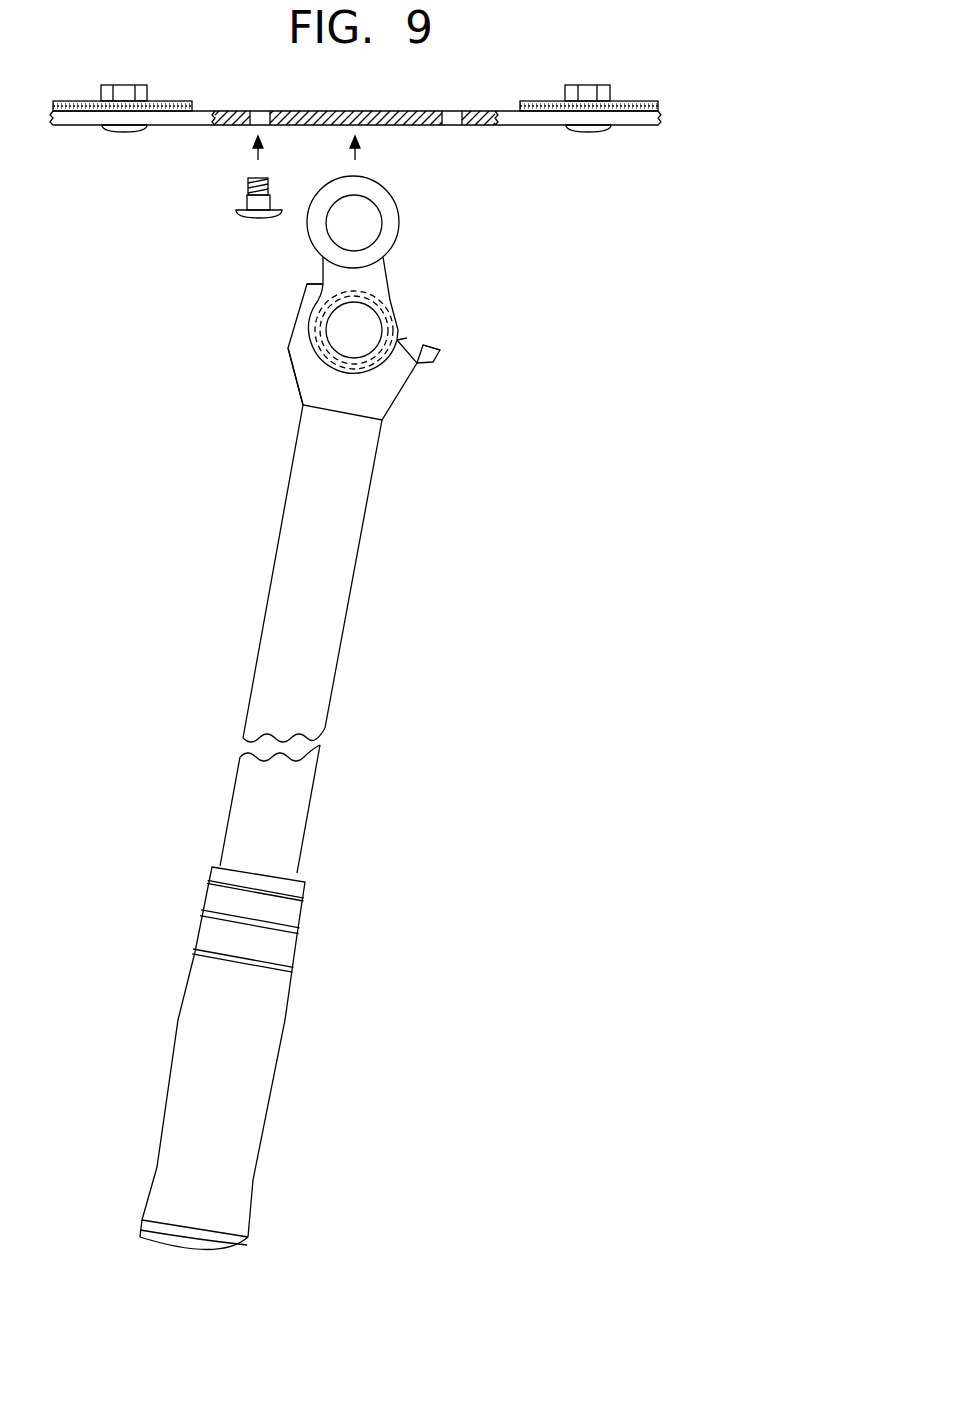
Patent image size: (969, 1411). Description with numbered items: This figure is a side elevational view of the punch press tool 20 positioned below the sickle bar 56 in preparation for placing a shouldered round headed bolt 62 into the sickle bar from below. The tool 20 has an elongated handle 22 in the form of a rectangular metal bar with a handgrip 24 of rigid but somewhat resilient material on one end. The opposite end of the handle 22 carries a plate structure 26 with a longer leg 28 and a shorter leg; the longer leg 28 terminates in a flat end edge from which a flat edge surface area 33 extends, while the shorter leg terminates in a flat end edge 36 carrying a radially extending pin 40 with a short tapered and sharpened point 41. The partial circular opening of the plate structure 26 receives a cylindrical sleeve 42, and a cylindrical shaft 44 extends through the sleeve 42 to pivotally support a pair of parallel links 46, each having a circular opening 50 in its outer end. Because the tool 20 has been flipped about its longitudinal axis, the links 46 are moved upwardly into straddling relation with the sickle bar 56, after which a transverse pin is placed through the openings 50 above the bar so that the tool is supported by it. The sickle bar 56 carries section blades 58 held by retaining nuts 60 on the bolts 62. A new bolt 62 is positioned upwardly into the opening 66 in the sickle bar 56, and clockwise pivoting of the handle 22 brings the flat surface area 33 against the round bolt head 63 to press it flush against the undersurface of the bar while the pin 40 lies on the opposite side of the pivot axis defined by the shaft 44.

The punch press tool 20 is at (243, 676).
The elongated handle 22 is at (318, 653).
The handgrip 24 is at (237, 1068).
The plate structure 26 is at (343, 397).
The leg 28 is at (293, 350).
The flat edge surface area 33 is at (305, 284).
The flat end edge 36 is at (407, 338).
The radially extending pin 40 is at (433, 362).
The tapered and sharpened point 41 is at (440, 349).
The cylindrical sleeve 42 is at (395, 288).
The cylindrical shaft 44 is at (362, 330).
The parallel links 46 is at (372, 265).
The circular opening 50 is at (373, 214).
The sickle bar 56 is at (422, 110).
The section blade 58 is at (622, 102).
The retaining nut 60 is at (588, 90).
The shouldered round headed bolt 62 is at (247, 185).
The round bolt head 63 is at (250, 220).
The opening 66 is at (455, 102).